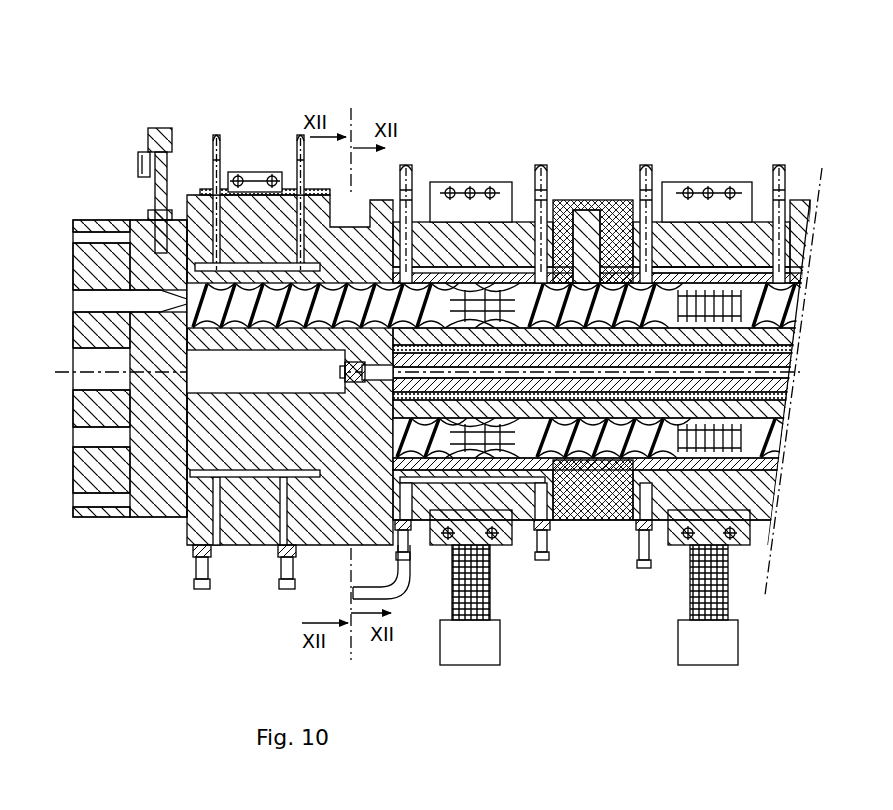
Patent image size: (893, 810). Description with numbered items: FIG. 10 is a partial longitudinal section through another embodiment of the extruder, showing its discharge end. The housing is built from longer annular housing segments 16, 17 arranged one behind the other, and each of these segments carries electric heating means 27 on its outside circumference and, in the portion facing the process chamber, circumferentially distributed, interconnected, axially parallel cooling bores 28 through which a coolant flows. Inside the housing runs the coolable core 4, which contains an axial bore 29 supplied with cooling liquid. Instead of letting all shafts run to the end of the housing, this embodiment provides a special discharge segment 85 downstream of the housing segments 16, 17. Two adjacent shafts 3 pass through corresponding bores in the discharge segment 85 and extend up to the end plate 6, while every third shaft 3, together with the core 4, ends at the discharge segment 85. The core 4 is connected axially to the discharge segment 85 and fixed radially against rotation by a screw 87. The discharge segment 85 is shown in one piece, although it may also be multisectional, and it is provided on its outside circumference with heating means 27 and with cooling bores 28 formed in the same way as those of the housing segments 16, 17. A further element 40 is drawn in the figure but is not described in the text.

The screw 3 is at (787, 303).
The core 4 is at (796, 366).
The end plate 6 is at (168, 517).
The housing segment 16 is at (500, 112).
The housing segment 17 is at (727, 118).
The electric heating means 27 is at (247, 170).
The cooling bores 28 is at (250, 267).
The axial bore 29 is at (798, 394).
The intermediate ring 40 is at (607, 200).
The discharge segment 85 is at (260, 512).
The screw 87 is at (366, 382).